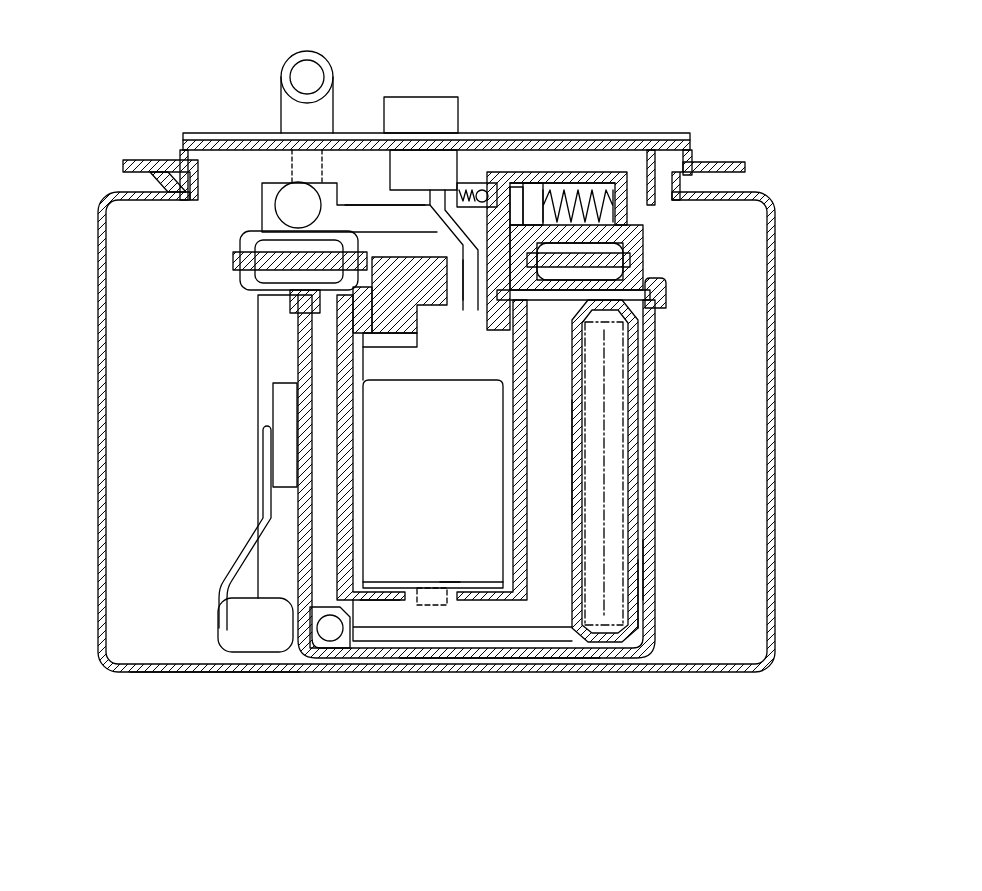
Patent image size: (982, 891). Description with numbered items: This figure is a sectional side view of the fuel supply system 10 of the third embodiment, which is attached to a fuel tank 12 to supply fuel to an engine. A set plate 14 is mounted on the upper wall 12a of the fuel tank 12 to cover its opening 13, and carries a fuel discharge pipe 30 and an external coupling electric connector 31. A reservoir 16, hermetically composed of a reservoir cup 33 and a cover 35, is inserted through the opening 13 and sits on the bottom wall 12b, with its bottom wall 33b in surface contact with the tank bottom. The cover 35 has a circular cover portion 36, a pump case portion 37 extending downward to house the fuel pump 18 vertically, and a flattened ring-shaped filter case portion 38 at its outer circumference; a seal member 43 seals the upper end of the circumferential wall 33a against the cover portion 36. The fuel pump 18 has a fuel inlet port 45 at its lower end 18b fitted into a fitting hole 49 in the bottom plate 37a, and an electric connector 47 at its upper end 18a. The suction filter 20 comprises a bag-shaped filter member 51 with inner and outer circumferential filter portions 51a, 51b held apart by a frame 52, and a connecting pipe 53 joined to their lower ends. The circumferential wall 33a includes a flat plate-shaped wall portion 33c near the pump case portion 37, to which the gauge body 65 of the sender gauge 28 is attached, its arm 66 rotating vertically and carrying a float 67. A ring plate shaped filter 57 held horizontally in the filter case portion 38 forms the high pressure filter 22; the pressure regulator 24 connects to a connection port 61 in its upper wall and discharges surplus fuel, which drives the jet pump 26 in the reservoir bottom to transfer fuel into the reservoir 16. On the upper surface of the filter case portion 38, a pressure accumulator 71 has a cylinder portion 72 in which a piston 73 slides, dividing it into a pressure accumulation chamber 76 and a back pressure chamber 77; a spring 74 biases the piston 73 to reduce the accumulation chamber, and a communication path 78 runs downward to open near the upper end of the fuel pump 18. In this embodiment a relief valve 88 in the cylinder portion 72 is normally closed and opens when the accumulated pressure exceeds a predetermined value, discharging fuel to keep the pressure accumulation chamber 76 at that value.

The fuel supply system 10 is at (722, 100).
The fuel tank 12 is at (775, 282).
The upper wall 12a is at (150, 178).
The bottom wall 12b is at (176, 675).
The opening 13 is at (213, 172).
The set plate 14 is at (553, 138).
The reservoir 16 is at (662, 388).
The fuel pump 18 is at (400, 558).
The upper end 18a is at (390, 358).
The lower end 18b is at (482, 585).
The suction filter 20 is at (634, 474).
The high pressure filter 22 is at (648, 258).
The pressure regulator 24 is at (262, 218).
The jet pump 26 is at (328, 632).
The sender gauge 28 is at (240, 560).
The fuel discharge pipe 30 is at (307, 50).
The external coupling electric connector 31 is at (427, 110).
The reservoir cup 33 is at (655, 523).
The circumferential wall 33a is at (658, 565).
The bottom wall 33b is at (610, 660).
The flat plate-shaped wall portion 33c is at (305, 330).
The cover 35 is at (410, 225).
The cover portion 36 is at (383, 270).
The pump case portion 37 is at (353, 375).
The bottom plate 37a is at (380, 598).
The filter case portion 38 is at (245, 248).
The seal member 43 is at (660, 291).
The fuel inlet port 45 is at (428, 605).
The electric connector 47 is at (457, 305).
The fitting hole 49 is at (450, 583).
The filter member 51 is at (640, 352).
The inner circumferential filter portion 51a is at (575, 472).
The outer circumferential filter portion 51b is at (637, 604).
The frame 52 is at (608, 433).
The connecting pipe 53 is at (557, 612).
The ring plate shaped filter 57 is at (245, 270).
The connection port 61 is at (300, 250).
The gauge body 65 is at (285, 408).
The arm 66 is at (250, 525).
The float 67 is at (232, 625).
The pressure accumulator 71 is at (612, 172).
The cylinder portion 72 is at (560, 182).
The piston 73 is at (532, 200).
The spring 74 is at (582, 204).
The pressure accumulation chamber 76 is at (514, 198).
The back pressure chamber 77 is at (622, 228).
The communication path 78 is at (462, 315).
The relief valve 88 is at (468, 178).